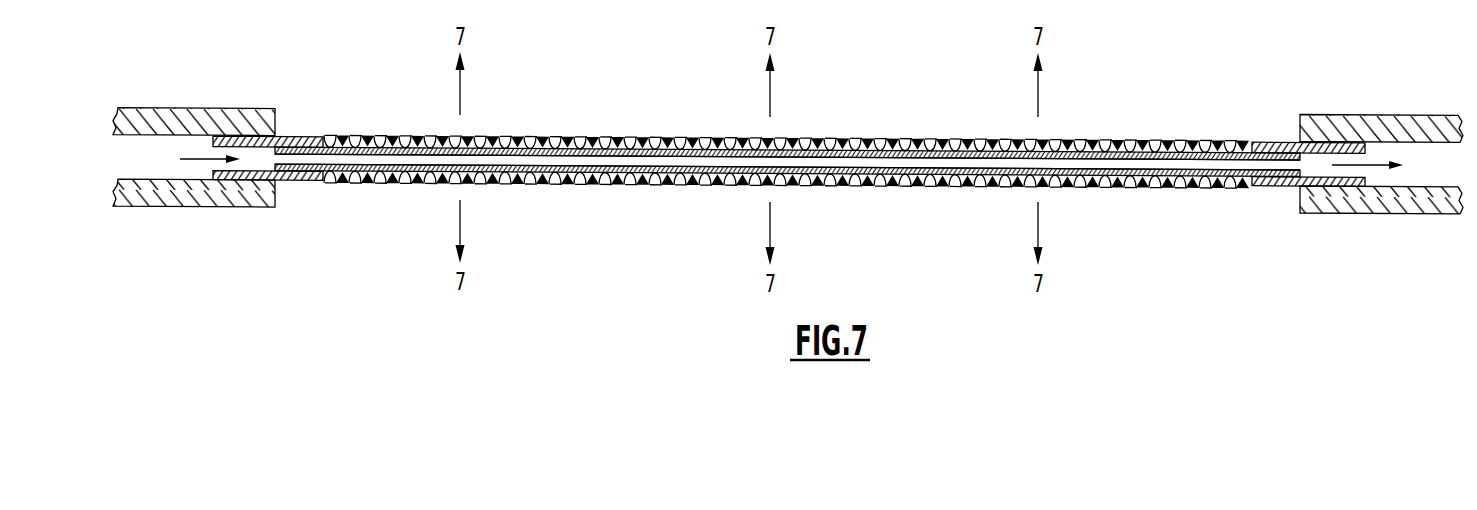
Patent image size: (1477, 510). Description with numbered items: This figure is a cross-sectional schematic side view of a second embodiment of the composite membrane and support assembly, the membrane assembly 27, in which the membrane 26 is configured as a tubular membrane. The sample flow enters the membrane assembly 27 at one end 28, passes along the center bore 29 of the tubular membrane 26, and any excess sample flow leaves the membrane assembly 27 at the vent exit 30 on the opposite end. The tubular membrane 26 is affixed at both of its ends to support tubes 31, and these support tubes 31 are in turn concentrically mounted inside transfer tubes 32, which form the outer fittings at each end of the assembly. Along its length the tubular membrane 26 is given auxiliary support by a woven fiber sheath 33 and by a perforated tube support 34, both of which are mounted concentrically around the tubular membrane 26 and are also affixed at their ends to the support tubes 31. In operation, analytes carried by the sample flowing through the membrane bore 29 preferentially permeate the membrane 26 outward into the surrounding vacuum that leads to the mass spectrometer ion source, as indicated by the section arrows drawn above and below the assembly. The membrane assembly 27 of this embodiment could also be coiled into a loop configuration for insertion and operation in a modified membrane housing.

The tubular membrane 26 is at (660, 152).
The membrane assembly 27 is at (788, 191).
The end 28 is at (195, 160).
The center bore 29 is at (680, 165).
The vent exit 30 is at (1383, 169).
The support tubes 31 is at (288, 182).
The transfer tubes 32 is at (203, 208).
The woven fiber sheath 33 is at (1112, 143).
The perforated tube support 34 is at (404, 117).